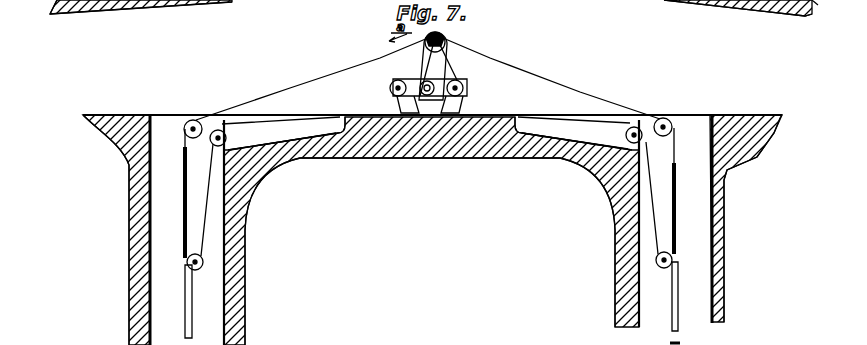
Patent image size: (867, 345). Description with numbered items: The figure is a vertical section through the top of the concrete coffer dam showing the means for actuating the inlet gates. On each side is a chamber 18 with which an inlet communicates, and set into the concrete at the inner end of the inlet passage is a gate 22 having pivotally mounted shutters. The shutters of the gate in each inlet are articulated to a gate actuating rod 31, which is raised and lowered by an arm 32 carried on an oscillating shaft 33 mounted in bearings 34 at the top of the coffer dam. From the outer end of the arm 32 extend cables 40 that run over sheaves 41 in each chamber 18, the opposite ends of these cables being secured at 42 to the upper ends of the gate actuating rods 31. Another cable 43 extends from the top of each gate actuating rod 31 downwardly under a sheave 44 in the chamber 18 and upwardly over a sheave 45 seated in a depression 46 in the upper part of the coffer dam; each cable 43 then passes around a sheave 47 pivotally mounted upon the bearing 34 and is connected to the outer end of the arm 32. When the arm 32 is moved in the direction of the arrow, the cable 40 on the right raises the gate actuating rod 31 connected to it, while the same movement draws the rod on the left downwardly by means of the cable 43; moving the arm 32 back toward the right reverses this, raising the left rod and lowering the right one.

The chamber 18 is at (160, 122).
The gate 22 is at (100, 5).
The gate actuating rod 31 is at (186, 312).
The arm 32 is at (447, 40).
The oscillating shaft 33 is at (433, 85).
The bearing 34 is at (428, 117).
The cable 40 is at (322, 78).
The sheave 41 is at (190, 119).
The cable securing point 42 is at (183, 148).
The cable 43 is at (343, 113).
The sheave 44 is at (197, 269).
The sheave 45 is at (227, 138).
The depression 46 is at (306, 135).
The sheave 47 is at (390, 87).